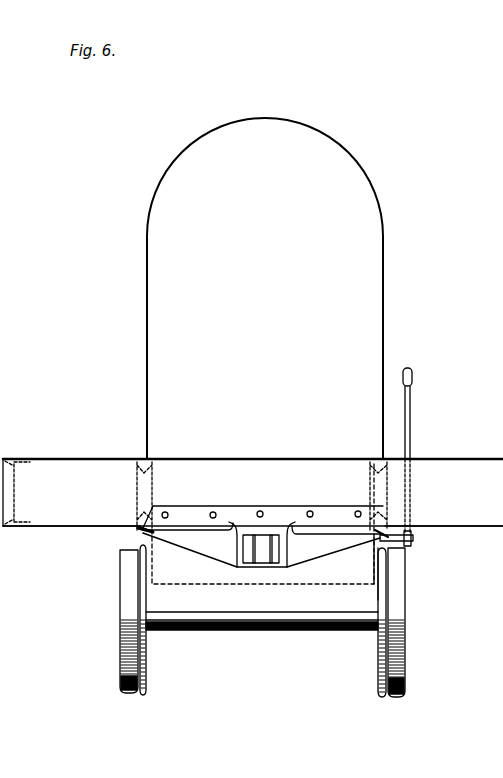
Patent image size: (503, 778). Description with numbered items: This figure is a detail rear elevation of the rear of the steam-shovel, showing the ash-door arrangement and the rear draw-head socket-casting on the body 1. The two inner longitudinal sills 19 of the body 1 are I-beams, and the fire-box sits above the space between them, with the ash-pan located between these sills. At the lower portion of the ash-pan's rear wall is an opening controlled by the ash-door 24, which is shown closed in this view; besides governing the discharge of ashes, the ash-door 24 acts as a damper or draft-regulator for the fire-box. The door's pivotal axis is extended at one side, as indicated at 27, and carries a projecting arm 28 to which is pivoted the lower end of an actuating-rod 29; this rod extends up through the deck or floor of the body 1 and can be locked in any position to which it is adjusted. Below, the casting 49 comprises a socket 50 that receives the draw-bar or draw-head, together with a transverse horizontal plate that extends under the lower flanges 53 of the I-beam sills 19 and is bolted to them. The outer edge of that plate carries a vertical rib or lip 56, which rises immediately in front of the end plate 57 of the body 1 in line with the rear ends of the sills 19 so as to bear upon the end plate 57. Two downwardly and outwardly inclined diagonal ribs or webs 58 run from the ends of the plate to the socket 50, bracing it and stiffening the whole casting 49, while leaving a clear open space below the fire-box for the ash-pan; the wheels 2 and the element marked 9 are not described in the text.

The body 1 is at (63, 464).
The wheels 2 is at (378, 660).
The rail end bracket 9 is at (15, 482).
The inner longitudinal sills 19 is at (136, 485).
The ash-door 24 is at (193, 584).
The extended end of pivotal axis 27 is at (394, 544).
The projecting arm 28 is at (414, 539).
The actuating-rod 29 is at (412, 437).
The casting 49 is at (236, 527).
The socket 50 is at (293, 568).
The lower flanges 53 is at (140, 528).
The vertical rib or lip 56 is at (188, 513).
The end plate 57 is at (69, 526).
The diagonal ribs or webs 58 is at (195, 546).